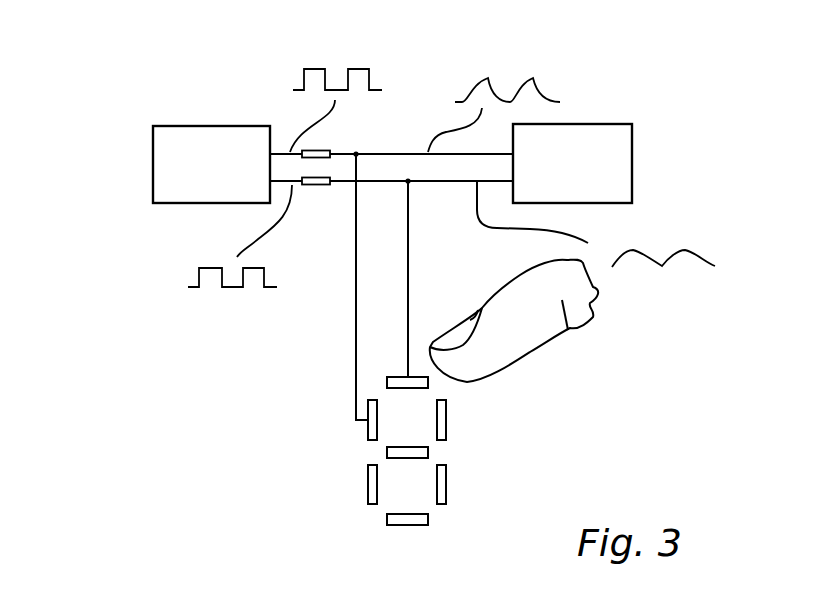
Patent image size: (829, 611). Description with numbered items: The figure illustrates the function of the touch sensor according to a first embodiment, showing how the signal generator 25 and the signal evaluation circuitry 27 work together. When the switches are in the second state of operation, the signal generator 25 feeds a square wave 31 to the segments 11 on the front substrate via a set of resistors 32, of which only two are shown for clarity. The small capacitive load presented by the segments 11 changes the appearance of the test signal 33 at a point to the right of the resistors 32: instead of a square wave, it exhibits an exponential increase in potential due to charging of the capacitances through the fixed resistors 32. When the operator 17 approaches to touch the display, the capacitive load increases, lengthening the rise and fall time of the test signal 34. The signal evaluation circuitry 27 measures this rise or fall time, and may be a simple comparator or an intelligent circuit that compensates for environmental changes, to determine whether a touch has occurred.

The signal generator 25 is at (153, 167).
The signal evaluation circuitry 27 is at (630, 137).
The square wave 31 is at (363, 62).
The resistors 32 is at (323, 149).
The test signal 33 is at (533, 73).
The test signal 34 is at (687, 268).
The operator 17 is at (517, 347).
The segments 11 is at (372, 492).